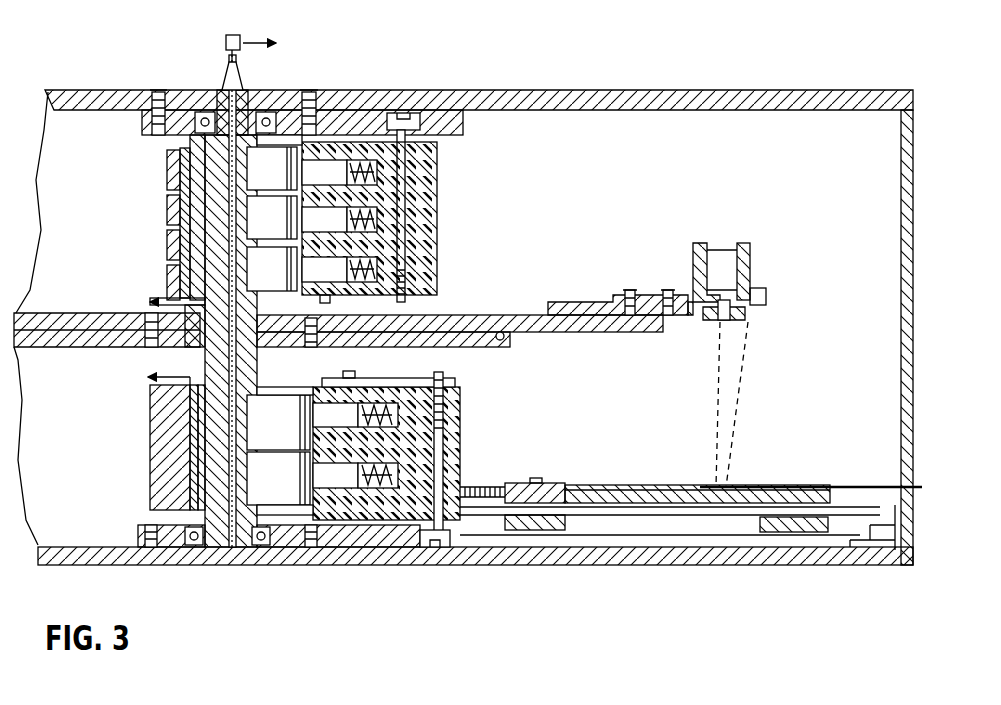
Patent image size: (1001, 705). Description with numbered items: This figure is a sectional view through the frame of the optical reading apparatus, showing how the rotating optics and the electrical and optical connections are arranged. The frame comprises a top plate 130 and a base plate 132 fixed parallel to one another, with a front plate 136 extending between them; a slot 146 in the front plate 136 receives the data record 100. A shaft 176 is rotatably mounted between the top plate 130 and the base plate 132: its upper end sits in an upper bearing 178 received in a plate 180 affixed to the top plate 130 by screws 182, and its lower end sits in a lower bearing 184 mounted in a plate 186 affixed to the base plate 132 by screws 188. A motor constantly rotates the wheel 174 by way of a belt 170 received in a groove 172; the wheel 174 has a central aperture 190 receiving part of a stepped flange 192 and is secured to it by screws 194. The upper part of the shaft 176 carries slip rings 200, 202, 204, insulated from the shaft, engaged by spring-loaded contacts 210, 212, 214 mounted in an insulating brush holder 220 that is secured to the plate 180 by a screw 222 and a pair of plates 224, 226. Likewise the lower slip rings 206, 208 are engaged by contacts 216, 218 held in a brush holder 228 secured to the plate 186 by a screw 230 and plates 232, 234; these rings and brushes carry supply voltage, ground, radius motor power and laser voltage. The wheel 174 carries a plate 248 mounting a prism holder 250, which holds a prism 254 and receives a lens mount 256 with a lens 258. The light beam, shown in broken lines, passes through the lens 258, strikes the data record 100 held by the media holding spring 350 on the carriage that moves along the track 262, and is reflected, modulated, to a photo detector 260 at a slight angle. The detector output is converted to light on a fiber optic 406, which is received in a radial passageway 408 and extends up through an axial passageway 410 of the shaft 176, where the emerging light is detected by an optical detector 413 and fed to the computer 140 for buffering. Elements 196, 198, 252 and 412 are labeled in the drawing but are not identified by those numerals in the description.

The data record 100 is at (825, 485).
The top plate 130 is at (534, 100).
The base plate 132 is at (560, 565).
The front plate 136 is at (902, 133).
The computer 140 is at (365, 45).
The slot 146 is at (895, 480).
The belt 170 is at (520, 345).
The groove 172 is at (505, 342).
The wheel 174 is at (462, 340).
The shaft 176 is at (262, 350).
The upper bearing 178 is at (195, 138).
The plate 180 is at (350, 108).
The screws 182 is at (155, 90).
The lower bearing 184 is at (272, 552).
The plate 186 is at (352, 552).
The screws 188 is at (150, 550).
The central aperture 190 is at (300, 312).
The stepped flange 192 is at (140, 347).
The screws 194 is at (145, 300).
The piezo layer 196 is at (180, 165).
The lower piezo layer 198 is at (165, 480).
The slip ring 200 is at (175, 185).
The slip ring 202 is at (170, 215).
The slip ring 204 is at (170, 240).
The slip ring 206 is at (155, 418).
The slip ring 208 is at (155, 450).
The spring-loaded contact 210 is at (347, 183).
The spring-loaded contact 212 is at (347, 230).
The spring-loaded contact 214 is at (347, 280).
The spring-loaded contact 216 is at (356, 426).
The spring-loaded contact 218 is at (356, 486).
The insulating brush holder 220 is at (432, 185).
The screw 222 is at (410, 112).
The plate 224 is at (443, 140).
The plate 226 is at (432, 288).
The brush holder 228 is at (458, 425).
The screw 230 is at (430, 547).
The plate 232 is at (455, 547).
The plate 234 is at (362, 380).
The plate 248 is at (600, 302).
The prism holder 250 is at (690, 270).
The bracket screws 252 is at (670, 292).
The prism 254 is at (722, 250).
The lens mount 256 is at (703, 322).
The lens 258 is at (728, 322).
The photo detector 260 is at (765, 290).
The track 262 is at (552, 480).
The media holding spring 350 is at (700, 483).
The fiber optic 406 is at (170, 275).
The radial passageway 408 is at (171, 365).
The axial passageway 410 is at (230, 96).
The probe tip cone 412 is at (244, 85).
The optical detector 413 is at (236, 36).